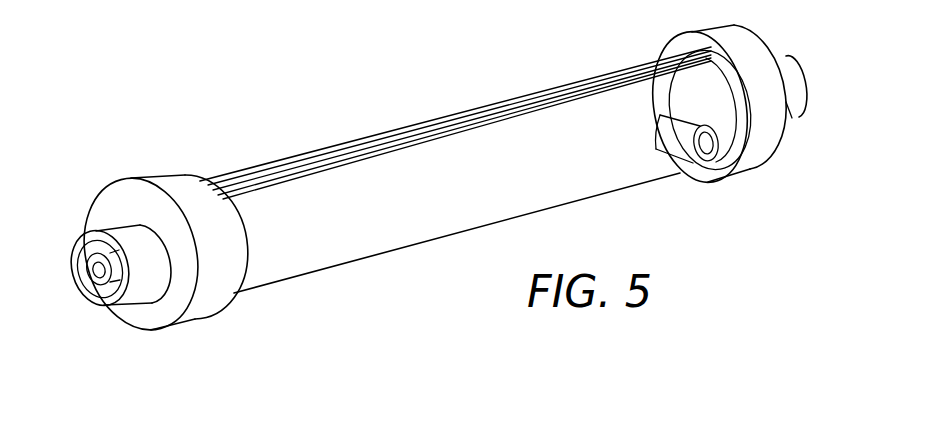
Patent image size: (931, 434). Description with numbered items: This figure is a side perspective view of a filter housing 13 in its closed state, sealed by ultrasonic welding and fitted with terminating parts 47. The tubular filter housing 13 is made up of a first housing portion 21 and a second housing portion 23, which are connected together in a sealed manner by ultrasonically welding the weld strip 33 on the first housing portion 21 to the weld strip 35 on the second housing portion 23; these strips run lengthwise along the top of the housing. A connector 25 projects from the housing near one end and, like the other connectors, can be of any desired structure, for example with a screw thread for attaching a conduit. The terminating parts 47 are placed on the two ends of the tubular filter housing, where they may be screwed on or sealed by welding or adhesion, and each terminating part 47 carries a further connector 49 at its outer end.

The filter housing 13 is at (218, 155).
The first housing portion 21 is at (591, 186).
The second housing portion 23 is at (551, 83).
The connector 25 is at (678, 148).
The weld strip 33 is at (452, 117).
The weld strip 35 is at (320, 152).
The terminating part 47 is at (129, 200).
The further connector 49 is at (117, 230).